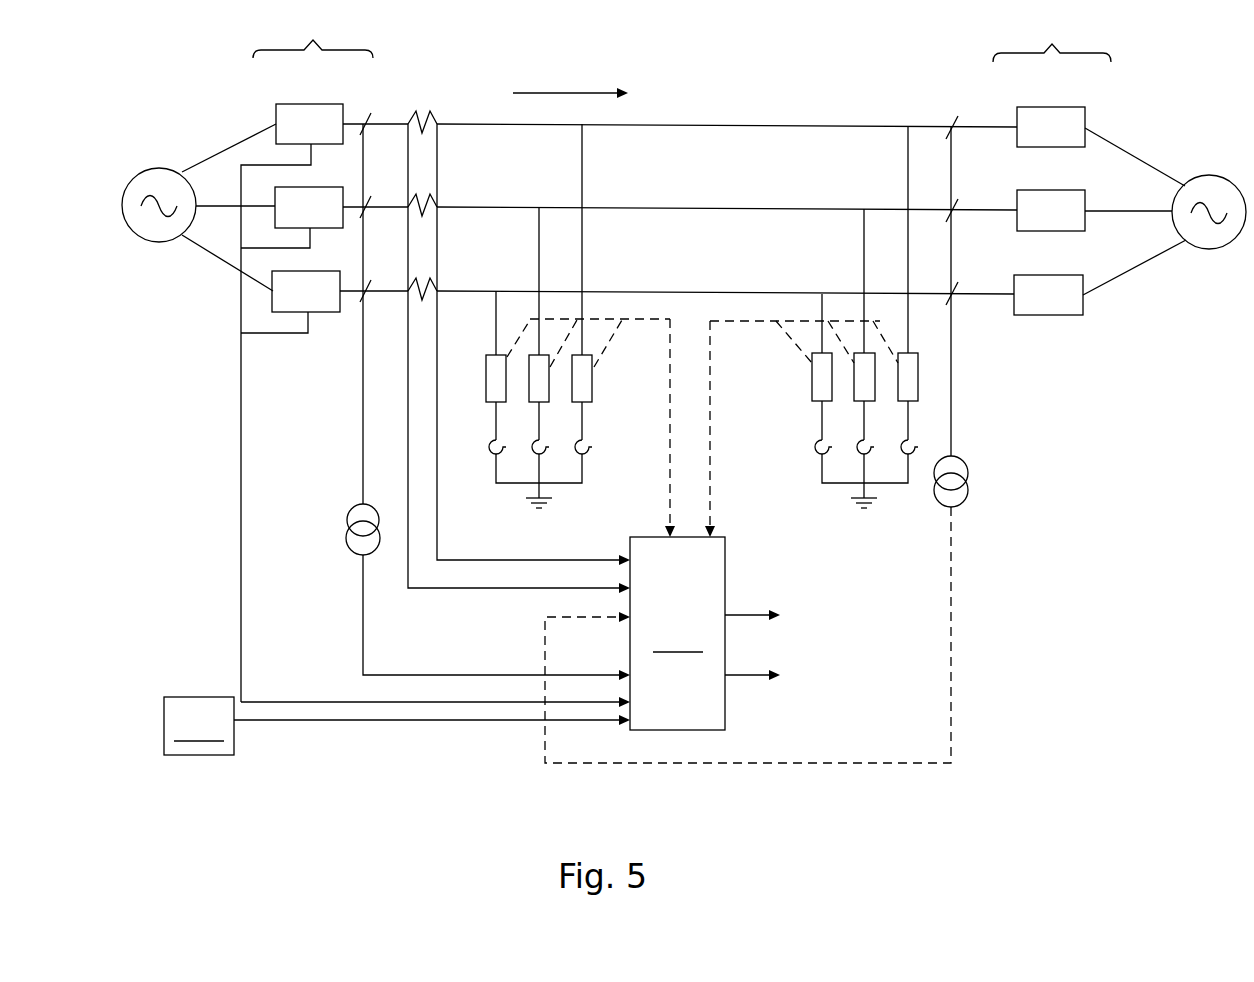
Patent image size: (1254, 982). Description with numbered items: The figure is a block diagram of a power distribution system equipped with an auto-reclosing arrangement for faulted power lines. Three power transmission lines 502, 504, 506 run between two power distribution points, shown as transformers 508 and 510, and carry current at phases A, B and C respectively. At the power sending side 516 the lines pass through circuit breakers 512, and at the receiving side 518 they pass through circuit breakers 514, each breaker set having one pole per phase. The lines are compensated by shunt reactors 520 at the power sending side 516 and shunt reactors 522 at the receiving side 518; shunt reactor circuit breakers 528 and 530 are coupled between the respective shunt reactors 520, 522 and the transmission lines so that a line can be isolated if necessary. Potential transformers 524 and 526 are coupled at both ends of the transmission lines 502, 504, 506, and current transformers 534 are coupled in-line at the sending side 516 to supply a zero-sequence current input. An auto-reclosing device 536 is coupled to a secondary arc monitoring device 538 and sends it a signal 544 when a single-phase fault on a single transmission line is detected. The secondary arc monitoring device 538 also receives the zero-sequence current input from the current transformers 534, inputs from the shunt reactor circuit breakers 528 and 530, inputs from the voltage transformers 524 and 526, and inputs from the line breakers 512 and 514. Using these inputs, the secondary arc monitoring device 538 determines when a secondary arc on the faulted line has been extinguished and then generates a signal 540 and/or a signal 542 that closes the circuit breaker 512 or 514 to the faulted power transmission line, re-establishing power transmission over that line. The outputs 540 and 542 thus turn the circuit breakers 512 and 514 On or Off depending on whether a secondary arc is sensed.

The power transmission line 502 is at (695, 124).
The power transmission line 504 is at (695, 207).
The power transmission line 506 is at (695, 291).
The transformer 508 is at (153, 168).
The transformer 510 is at (1208, 175).
The circuit breaker 512 is at (306, 384).
The circuit breaker 514 is at (1015, 191).
The power sending side 516 is at (313, 31).
The receiving side 518 is at (1052, 38).
The shunt reactor 520 is at (567, 455).
The shunt reactor 522 is at (841, 454).
The potential transformer 524 is at (959, 472).
The potential transformer 526 is at (345, 517).
The shunt reactor circuit breaker 528 is at (580, 330).
The shunt reactor circuit breaker 530 is at (811, 331).
The current transformers 534 is at (419, 113).
The auto-reclosing device 536 is at (199, 726).
The secondary arc monitoring device 538 is at (483, 427).
The signal 540 is at (782, 615).
The signal 542 is at (782, 675).
The signal 544 is at (357, 722).